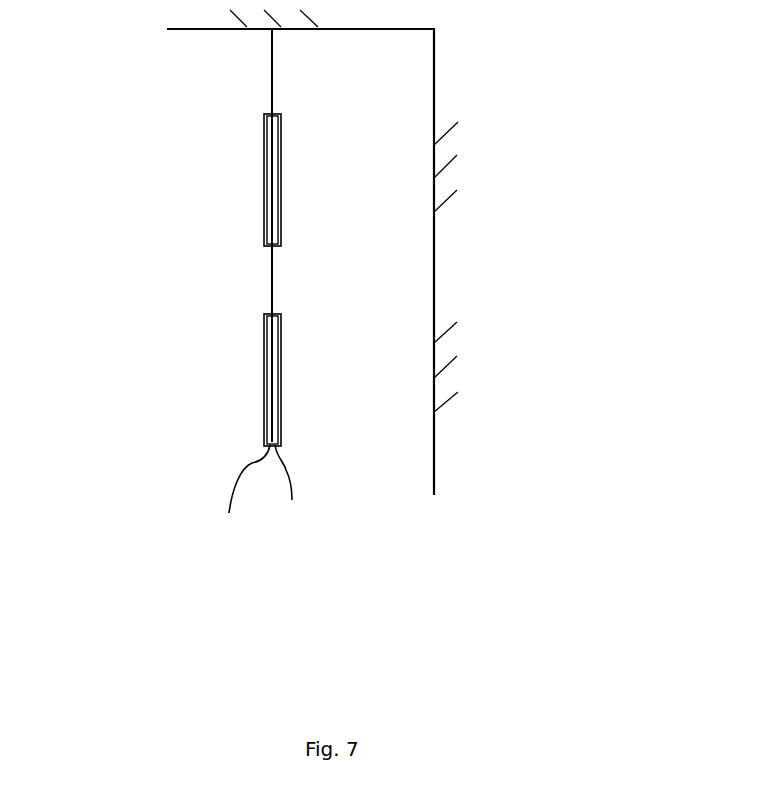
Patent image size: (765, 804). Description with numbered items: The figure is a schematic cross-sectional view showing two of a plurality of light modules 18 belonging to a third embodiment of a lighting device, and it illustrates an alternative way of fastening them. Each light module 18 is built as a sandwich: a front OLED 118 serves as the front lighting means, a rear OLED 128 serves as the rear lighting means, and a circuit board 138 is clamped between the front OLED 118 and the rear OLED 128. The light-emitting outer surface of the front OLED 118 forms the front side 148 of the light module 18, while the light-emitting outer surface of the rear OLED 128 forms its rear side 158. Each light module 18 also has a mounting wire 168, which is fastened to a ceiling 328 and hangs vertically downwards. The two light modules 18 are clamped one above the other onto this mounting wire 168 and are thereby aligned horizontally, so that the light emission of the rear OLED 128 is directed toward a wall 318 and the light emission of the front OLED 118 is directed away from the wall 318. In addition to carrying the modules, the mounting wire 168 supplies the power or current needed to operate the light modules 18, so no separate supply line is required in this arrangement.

The light module 18 is at (172, 206).
The front OLED 118 is at (262, 218).
The rear OLED 128 is at (295, 489).
The circuit board 138 is at (241, 497).
The front side 148 is at (262, 174).
The rear side 158 is at (281, 393).
The mounting wire 168 is at (272, 78).
The wall 318 is at (445, 181).
The ceiling 328 is at (380, 13).